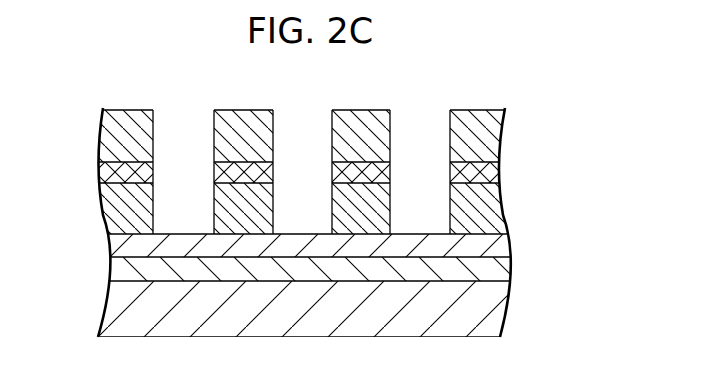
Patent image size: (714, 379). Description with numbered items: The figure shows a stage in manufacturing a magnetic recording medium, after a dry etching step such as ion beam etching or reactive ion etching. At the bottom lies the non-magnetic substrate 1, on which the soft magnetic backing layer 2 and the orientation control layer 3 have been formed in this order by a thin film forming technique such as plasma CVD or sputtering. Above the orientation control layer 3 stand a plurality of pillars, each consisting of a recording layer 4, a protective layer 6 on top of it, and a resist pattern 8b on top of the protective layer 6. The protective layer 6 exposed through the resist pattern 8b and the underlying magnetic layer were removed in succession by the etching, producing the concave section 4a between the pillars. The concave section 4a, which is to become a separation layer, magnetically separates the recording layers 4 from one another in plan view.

The non-magnetic substrate 1 is at (487, 322).
The soft magnetic backing layer 2 is at (493, 268).
The orientation control layer 3 is at (500, 248).
The recording layer 4 is at (115, 213).
The concave section 4a is at (214, 201).
The protective layer 6 is at (478, 172).
The resist pattern 8b is at (498, 131).